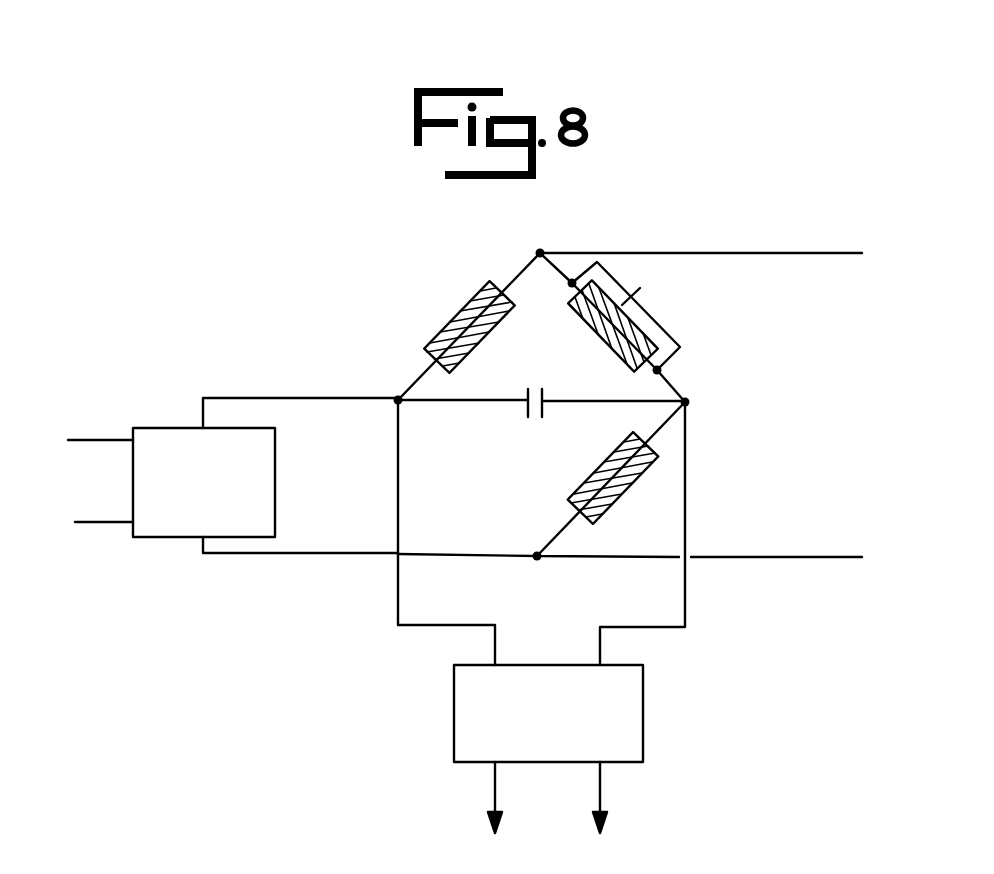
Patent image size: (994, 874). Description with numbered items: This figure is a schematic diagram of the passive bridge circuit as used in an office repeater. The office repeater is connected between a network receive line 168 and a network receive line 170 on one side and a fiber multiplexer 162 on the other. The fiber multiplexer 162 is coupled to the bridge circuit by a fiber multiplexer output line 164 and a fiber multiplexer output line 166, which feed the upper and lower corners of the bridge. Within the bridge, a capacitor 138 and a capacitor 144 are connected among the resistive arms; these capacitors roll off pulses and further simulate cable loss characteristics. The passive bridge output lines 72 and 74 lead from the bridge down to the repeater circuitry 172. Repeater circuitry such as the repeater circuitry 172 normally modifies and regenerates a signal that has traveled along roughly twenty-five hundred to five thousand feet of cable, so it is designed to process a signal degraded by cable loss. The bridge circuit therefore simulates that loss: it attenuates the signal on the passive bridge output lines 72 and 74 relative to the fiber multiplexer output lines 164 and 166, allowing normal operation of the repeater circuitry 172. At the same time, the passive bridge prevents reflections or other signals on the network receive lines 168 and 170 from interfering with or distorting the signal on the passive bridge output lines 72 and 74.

The fiber multiplexer 162 is at (132, 482).
The fiber multiplexer output line 164 is at (335, 389).
The fiber multiplexer output line 166 is at (347, 560).
The capacitor 138 is at (647, 289).
The capacitor 144 is at (567, 367).
The network receive line 168 is at (781, 253).
The network receive line 170 is at (838, 537).
The passive bridge output line 74 is at (470, 608).
The passive bridge output line 72 is at (687, 612).
The repeater circuitry 172 is at (643, 737).